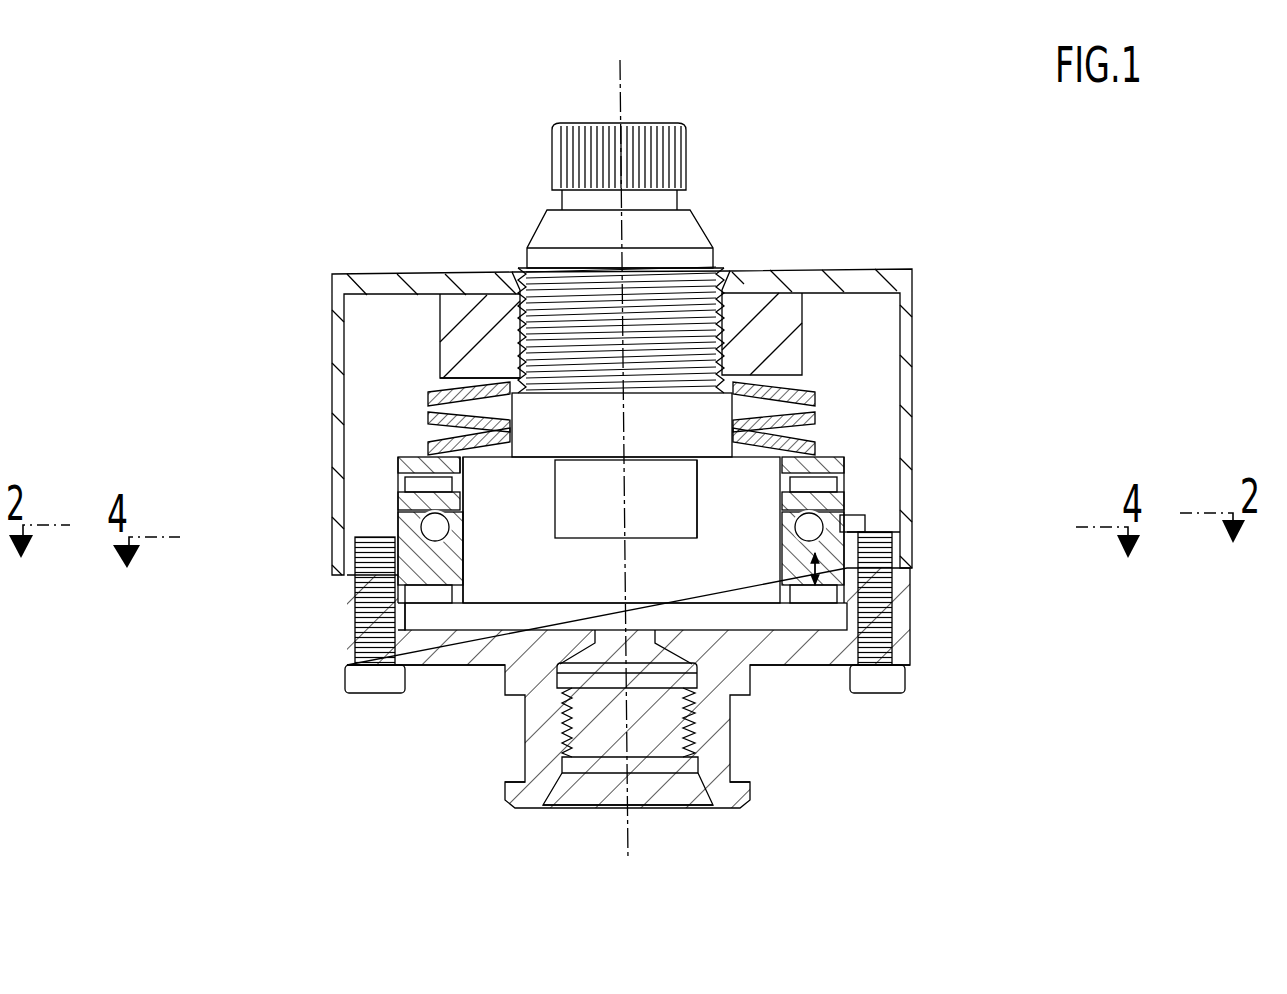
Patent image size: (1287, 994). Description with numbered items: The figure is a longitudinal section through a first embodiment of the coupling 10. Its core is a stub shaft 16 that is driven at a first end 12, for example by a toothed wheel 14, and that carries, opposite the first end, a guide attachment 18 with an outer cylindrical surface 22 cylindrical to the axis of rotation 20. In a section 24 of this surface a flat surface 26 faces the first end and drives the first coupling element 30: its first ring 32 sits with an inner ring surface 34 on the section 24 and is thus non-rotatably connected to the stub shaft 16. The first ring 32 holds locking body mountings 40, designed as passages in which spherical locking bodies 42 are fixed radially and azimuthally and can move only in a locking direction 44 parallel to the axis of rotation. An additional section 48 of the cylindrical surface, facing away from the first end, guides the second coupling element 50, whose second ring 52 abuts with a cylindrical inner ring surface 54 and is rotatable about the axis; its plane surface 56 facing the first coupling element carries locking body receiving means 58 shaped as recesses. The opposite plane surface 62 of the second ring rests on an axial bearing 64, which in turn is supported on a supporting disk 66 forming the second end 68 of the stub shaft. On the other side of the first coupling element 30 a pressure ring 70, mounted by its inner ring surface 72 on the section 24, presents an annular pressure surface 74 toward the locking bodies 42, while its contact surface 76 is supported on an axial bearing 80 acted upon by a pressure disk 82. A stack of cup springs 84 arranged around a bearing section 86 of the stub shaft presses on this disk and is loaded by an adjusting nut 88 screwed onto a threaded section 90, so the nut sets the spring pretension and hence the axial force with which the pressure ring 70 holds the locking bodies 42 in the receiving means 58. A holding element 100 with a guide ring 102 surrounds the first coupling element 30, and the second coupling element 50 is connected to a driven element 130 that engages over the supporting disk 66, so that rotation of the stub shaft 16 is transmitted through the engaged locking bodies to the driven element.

The coupling 10 is at (338, 230).
The first end 12 is at (657, 180).
The toothed wheel 14 is at (665, 176).
The stub shaft 16 is at (682, 262).
The guide attachment 18 is at (766, 600).
The axis of rotation 20 is at (632, 74).
The outer cylindrical surface 22 is at (621, 530).
The section 24 is at (715, 499).
The flat surface 26 is at (626, 499).
The first coupling element 30 is at (860, 500).
The first ring 32 is at (868, 577).
The inner ring surface 34 is at (463, 530).
The locking body mountings 40 is at (846, 492).
The locking bodies 42 is at (842, 468).
The locking direction 44 is at (838, 541).
The additional section 48 is at (759, 569).
The second coupling element 50 is at (405, 588).
The second ring 52 is at (420, 568).
The cylindrical inner ring surface 54 is at (478, 632).
The plane surface 56 is at (352, 525).
The locking body receiving means 58 is at (398, 522).
The plane surface 62 is at (418, 612).
The axial bearing 64 is at (437, 622).
The supporting disk 66 is at (450, 617).
The second end 68 is at (730, 633).
The pressure ring 70 is at (398, 503).
The inner ring surface 72 is at (465, 498).
The annular pressure surface 74 is at (398, 510).
The contact surface 76 is at (398, 487).
The axial bearing 80 is at (398, 462).
The pressure disk 82 is at (422, 456).
The stack of cup springs 84 is at (829, 404).
The bearing section 86 is at (622, 425).
The adjusting nut 88 is at (790, 360).
The threaded section 90 is at (515, 335).
The holding element 100 is at (882, 510).
The guide ring 102 is at (844, 521).
The driven element 130 is at (520, 800).